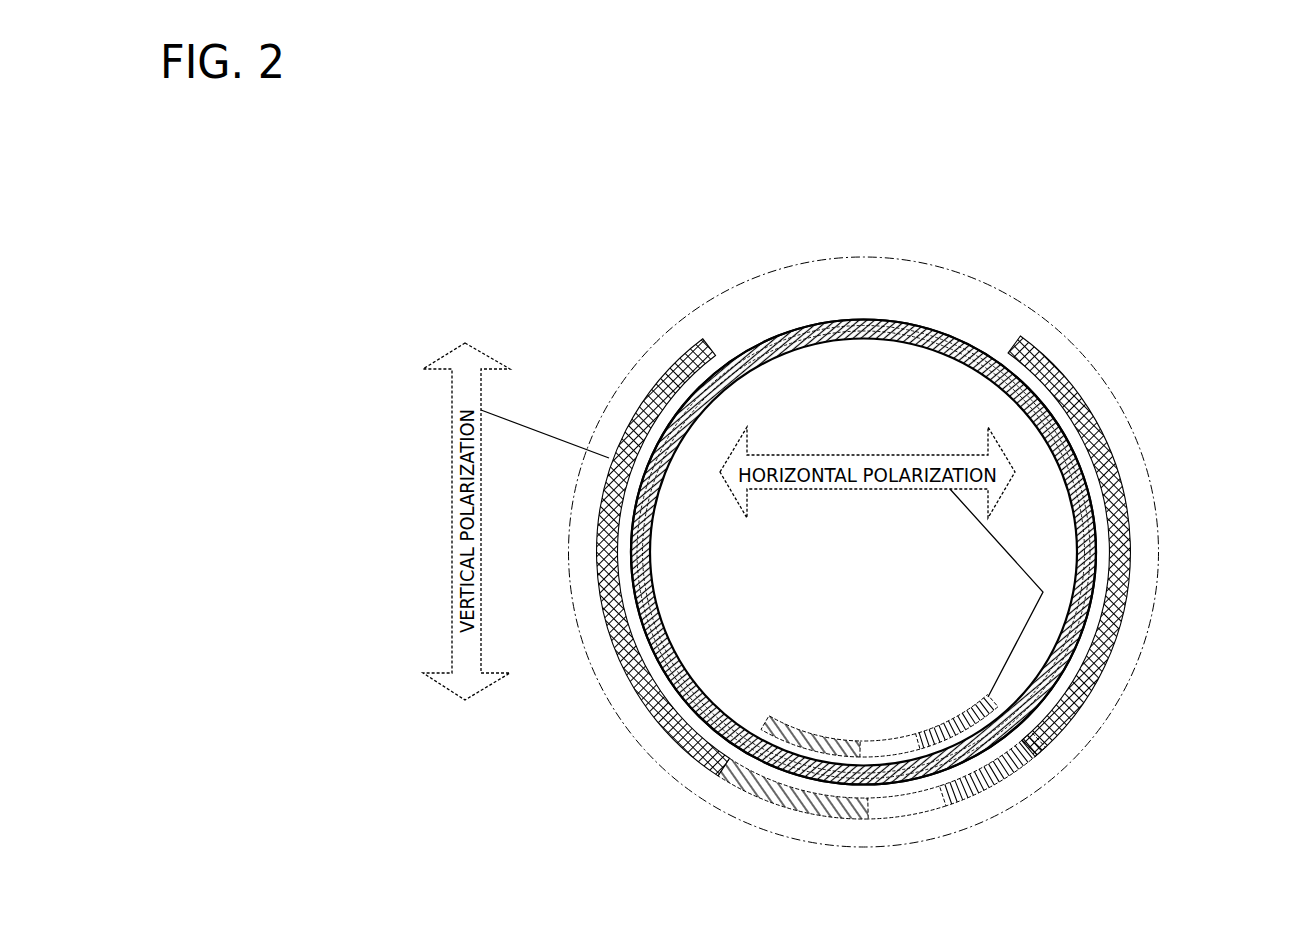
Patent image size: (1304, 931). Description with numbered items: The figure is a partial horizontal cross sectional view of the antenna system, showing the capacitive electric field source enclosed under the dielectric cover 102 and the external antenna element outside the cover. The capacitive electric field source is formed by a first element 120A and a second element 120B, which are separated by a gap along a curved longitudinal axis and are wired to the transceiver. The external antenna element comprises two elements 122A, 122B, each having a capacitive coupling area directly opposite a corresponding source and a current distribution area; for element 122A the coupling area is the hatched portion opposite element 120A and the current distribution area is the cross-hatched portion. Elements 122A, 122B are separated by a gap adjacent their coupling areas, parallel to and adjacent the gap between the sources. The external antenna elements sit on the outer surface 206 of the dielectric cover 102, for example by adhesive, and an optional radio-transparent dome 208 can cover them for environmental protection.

The dielectric cover 102 is at (862, 321).
The outer surface 206 is at (757, 341).
The outer radio-transparent dome 208 is at (995, 288).
The first element 120A is at (786, 724).
The second element 120B is at (937, 740).
The external antenna element 122A is at (847, 818).
The external antenna element 122B is at (1105, 437).